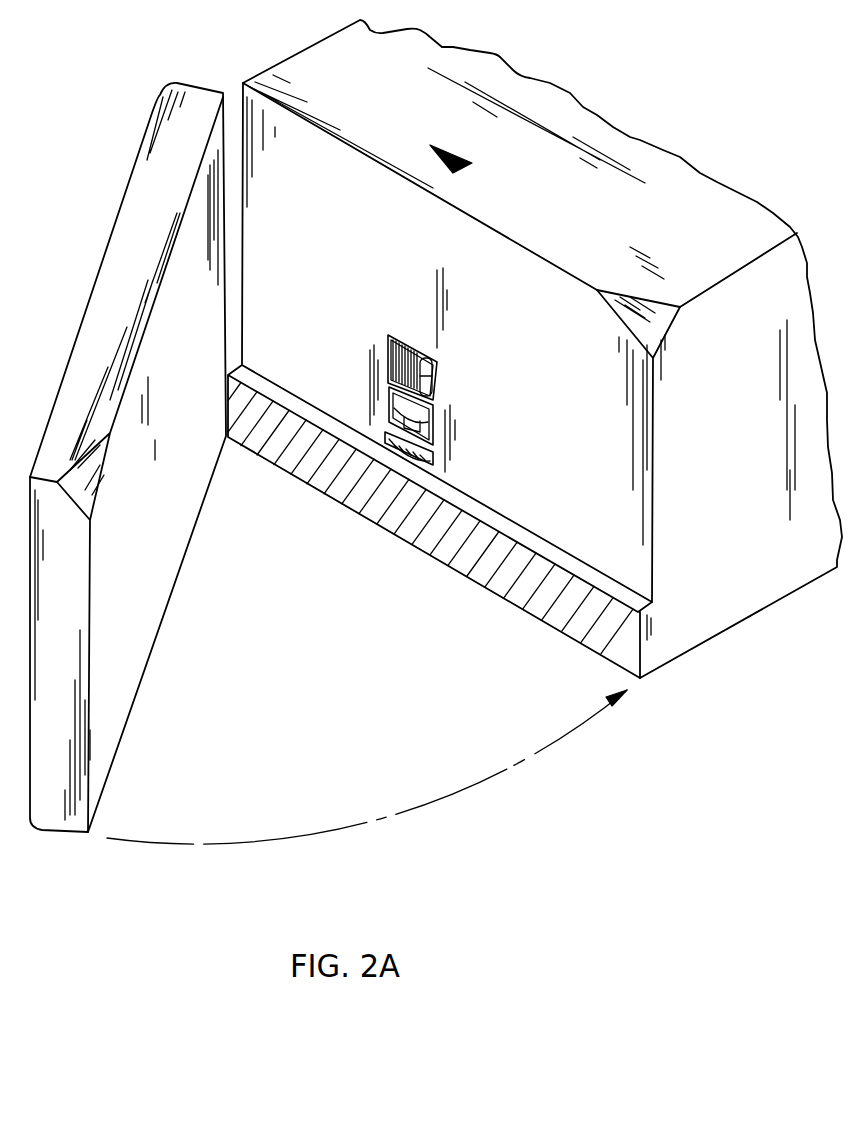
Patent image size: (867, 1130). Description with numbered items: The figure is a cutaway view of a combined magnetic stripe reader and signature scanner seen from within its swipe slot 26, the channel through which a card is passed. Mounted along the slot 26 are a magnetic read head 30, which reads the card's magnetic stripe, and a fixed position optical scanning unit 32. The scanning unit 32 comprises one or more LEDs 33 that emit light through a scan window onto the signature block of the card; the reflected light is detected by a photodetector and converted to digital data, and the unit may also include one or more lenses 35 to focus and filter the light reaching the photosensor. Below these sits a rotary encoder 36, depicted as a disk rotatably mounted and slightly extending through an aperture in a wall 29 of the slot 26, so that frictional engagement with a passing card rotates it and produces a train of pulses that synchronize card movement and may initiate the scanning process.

The slot 26 is at (613, 522).
The wall 29 is at (511, 493).
The magnetic read head 30 is at (435, 437).
The optical scanning unit 32 is at (410, 343).
The LEDs 33 is at (428, 373).
The lenses 35 is at (398, 355).
The rotary encoder 36 is at (383, 437).